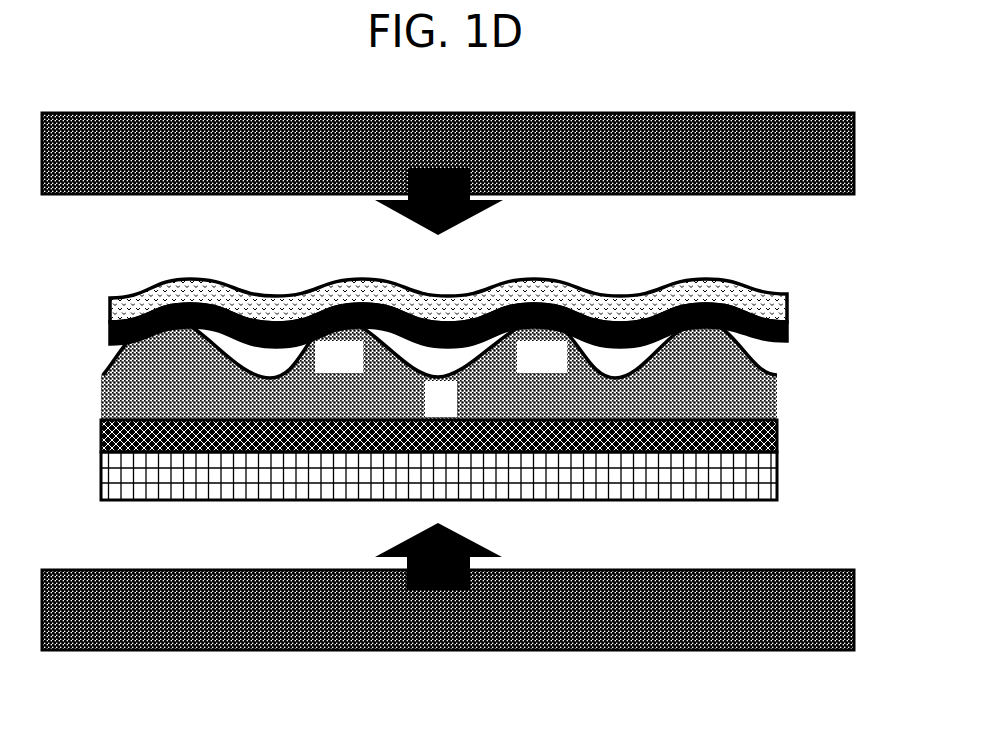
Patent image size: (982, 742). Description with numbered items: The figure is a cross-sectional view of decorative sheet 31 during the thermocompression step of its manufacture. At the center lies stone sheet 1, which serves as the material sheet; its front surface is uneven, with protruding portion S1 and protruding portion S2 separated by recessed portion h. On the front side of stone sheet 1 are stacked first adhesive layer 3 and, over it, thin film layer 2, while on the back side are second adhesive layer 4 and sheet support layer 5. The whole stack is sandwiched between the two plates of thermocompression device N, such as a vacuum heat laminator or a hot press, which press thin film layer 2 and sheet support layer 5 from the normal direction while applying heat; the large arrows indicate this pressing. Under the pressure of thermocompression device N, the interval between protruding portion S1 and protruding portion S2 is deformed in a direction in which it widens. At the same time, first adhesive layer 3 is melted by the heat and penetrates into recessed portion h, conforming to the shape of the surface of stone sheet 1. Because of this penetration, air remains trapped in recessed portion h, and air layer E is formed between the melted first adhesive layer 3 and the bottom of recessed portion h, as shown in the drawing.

The thermocompression device N is at (730, 172).
The decorative sheet 31 is at (426, 389).
The stone sheet 1 is at (745, 400).
The thin film layer 2 is at (752, 300).
The first adhesive layer 3 is at (780, 340).
The second adhesive layer 4 is at (777, 430).
The sheet support layer 5 is at (748, 477).
The air layer E is at (440, 360).
The protruding portion S1 is at (339, 358).
The protruding portion S2 is at (542, 358).
The recessed portion h is at (441, 399).